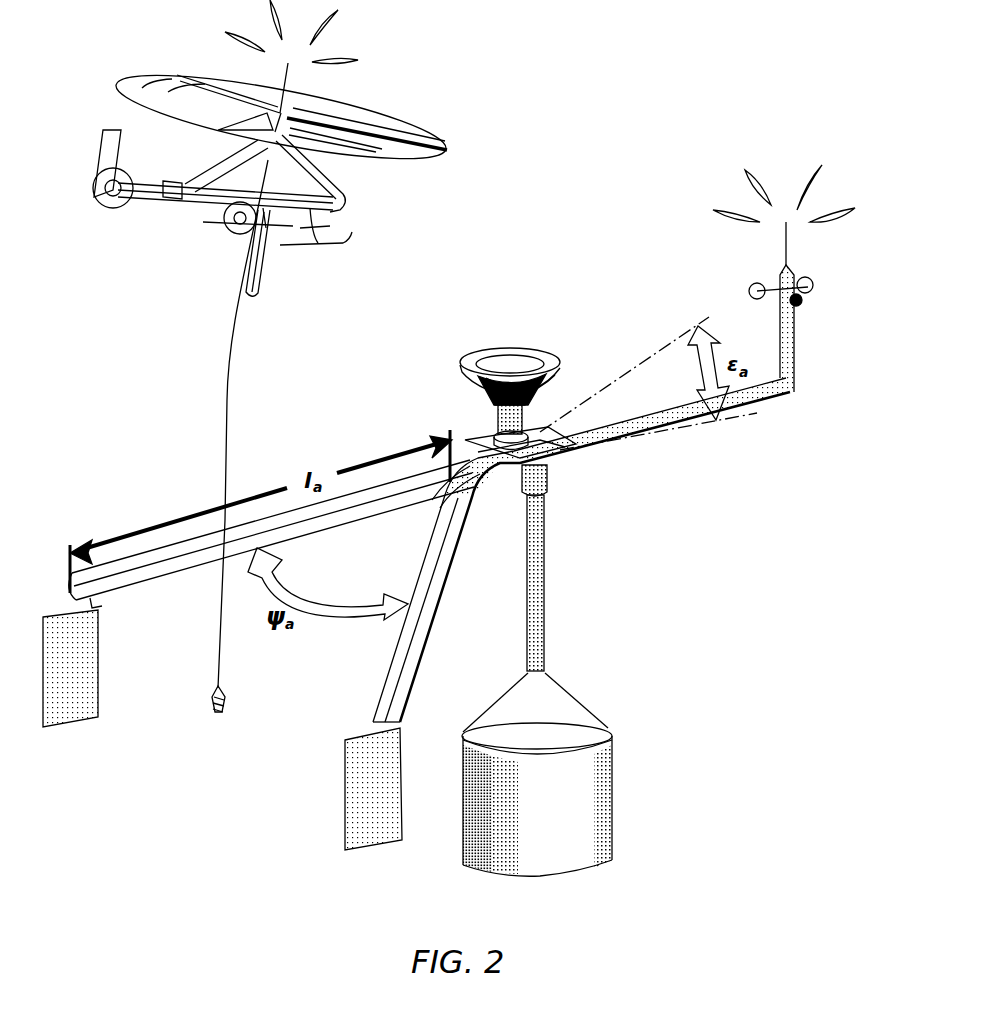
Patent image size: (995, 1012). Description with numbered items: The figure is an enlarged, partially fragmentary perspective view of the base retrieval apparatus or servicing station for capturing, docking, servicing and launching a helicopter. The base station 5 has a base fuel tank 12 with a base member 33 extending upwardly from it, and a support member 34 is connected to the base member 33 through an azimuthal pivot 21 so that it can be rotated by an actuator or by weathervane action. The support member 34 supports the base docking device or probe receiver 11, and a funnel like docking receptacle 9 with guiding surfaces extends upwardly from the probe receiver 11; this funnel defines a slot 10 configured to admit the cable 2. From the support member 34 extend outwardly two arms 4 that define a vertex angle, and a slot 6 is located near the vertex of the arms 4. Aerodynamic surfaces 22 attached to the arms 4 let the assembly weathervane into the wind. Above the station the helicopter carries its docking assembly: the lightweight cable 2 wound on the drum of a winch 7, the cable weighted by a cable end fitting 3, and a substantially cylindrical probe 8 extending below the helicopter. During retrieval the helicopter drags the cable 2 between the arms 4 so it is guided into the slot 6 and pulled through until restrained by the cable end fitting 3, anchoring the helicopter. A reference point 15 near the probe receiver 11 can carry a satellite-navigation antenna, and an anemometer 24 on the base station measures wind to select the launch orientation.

The cable 2 is at (255, 424).
The cable end fitting 3 is at (245, 728).
The arms 4 is at (429, 550).
The base station 5 is at (720, 648).
The slot 6 is at (422, 512).
The winch 7 is at (211, 239).
The probe 8 is at (283, 273).
The funnel like docking receptacle 9 is at (519, 338).
The slot 10 is at (458, 416).
The probe receiver 11 is at (558, 401).
The base fuel tank 12 is at (586, 774).
The reference point 15 is at (793, 278).
The azimuthal pivot 21 is at (575, 495).
The aerodynamic surfaces 22 is at (222, 736).
The anemometer 24 is at (736, 282).
The base member 33 is at (550, 590).
The support member 34 is at (575, 458).